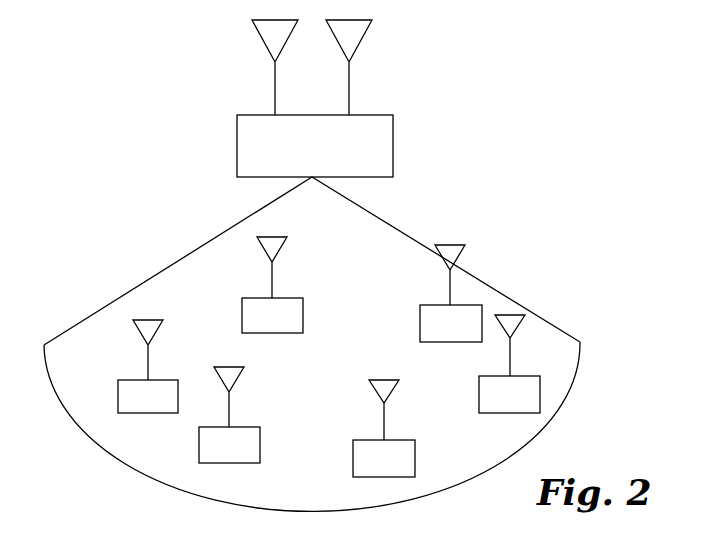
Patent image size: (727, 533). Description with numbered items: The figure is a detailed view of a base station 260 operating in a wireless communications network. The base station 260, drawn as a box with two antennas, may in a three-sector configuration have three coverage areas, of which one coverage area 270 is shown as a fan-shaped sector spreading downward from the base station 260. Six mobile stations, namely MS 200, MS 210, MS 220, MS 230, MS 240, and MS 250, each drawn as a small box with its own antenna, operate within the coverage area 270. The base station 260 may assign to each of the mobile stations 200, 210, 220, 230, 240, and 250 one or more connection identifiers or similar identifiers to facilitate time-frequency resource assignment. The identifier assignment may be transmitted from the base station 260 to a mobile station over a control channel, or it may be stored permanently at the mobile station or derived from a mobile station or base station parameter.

The mobile station 200 is at (353, 458).
The mobile station 210 is at (118, 398).
The mobile station 220 is at (420, 325).
The mobile station 230 is at (199, 446).
The mobile station 240 is at (479, 396).
The mobile station 250 is at (242, 316).
The base station 260 is at (393, 147).
The coverage area 270 is at (150, 278).